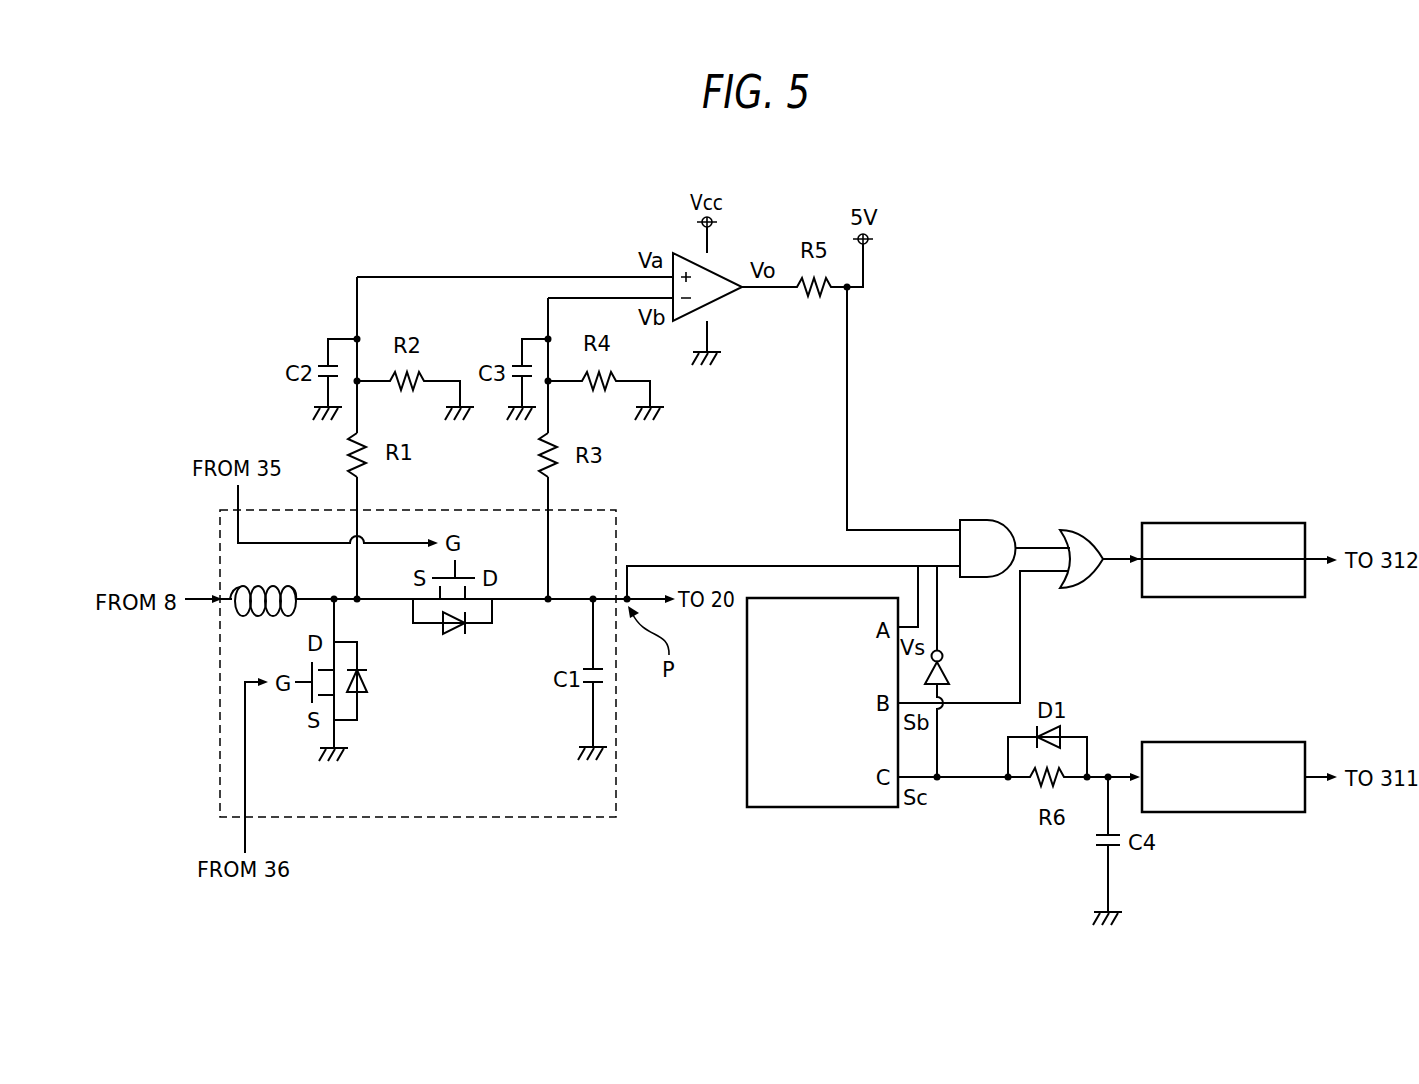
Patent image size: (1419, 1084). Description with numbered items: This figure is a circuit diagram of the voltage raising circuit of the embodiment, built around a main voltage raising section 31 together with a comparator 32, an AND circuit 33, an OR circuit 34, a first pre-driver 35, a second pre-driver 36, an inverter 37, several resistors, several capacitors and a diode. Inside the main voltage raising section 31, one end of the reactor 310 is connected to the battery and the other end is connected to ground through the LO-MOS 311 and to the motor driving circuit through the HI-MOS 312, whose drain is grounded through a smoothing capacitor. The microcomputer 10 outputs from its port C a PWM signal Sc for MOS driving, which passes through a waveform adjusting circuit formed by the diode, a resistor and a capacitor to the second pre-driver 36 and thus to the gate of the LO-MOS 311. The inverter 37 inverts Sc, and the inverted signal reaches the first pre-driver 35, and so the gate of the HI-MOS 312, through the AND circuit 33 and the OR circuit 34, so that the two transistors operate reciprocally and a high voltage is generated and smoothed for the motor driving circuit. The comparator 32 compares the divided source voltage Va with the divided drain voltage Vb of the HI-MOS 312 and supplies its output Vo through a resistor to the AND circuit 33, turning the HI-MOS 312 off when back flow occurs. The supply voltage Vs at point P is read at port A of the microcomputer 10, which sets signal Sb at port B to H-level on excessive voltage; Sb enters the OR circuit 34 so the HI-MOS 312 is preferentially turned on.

The microcomputer 10 is at (747, 703).
The main voltage raising section 31 is at (430, 820).
The reactor 310 is at (262, 618).
The LO-MOS 311 is at (370, 740).
The HI-MOS 312 is at (478, 645).
The comparator 32 is at (717, 304).
The AND circuit 33 is at (978, 519).
The OR circuit 34 is at (1078, 529).
The first pre-driver 35 is at (1226, 523).
The second pre-driver 36 is at (1226, 742).
The inverter 37 is at (950, 674).